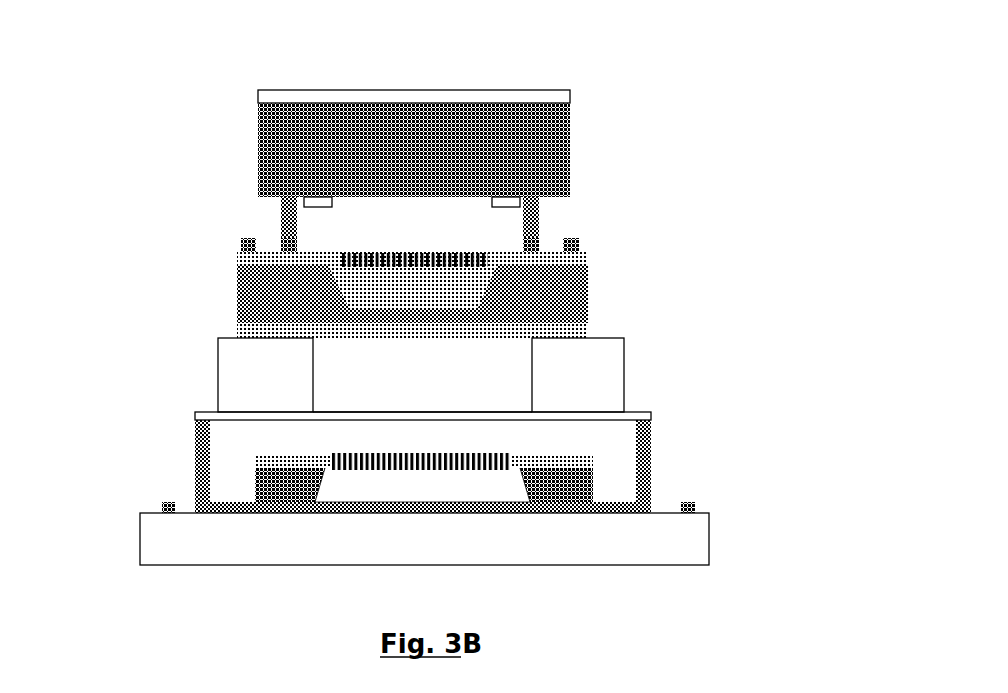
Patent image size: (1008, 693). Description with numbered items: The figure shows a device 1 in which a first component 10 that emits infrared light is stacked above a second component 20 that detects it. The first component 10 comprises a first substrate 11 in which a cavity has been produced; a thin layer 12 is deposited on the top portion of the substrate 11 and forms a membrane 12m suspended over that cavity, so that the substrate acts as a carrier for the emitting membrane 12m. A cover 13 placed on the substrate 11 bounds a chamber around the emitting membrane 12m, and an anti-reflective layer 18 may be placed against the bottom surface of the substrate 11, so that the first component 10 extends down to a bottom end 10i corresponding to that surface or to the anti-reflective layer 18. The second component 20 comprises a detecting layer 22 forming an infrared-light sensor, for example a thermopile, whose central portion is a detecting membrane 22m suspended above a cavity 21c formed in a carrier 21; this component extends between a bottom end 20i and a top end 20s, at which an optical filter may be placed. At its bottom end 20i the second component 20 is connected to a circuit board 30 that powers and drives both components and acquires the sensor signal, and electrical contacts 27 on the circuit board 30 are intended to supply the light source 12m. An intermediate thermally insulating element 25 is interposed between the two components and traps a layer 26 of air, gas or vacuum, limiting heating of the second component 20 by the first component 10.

The pressure sensor device 1 is at (128, 92).
The first component 10 is at (97, 93).
The bottom end of the first component 10i is at (256, 90).
The cover 13 is at (256, 160).
The thin layer 12 is at (238, 258).
The membrane 12m is at (382, 253).
The first substrate 11 is at (255, 298).
The anti-reflective layer 18 is at (550, 332).
The intermediate thermally insulating element 25 is at (237, 382).
The layer of thermal insulation 26 is at (470, 403).
The second component 20 is at (105, 415).
The top end of the second component 20s is at (198, 412).
The detecting layer 22 is at (255, 462).
The detecting membrane 22m is at (350, 458).
The carrier 21 is at (255, 490).
The cavity 21c is at (422, 485).
The bottom end of the second component 20i is at (342, 513).
The electrical contacts 27 is at (697, 506).
The circuit board 30 is at (105, 518).